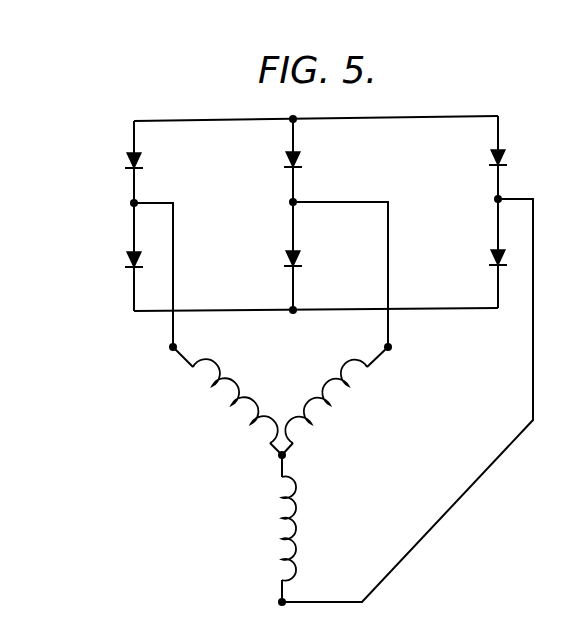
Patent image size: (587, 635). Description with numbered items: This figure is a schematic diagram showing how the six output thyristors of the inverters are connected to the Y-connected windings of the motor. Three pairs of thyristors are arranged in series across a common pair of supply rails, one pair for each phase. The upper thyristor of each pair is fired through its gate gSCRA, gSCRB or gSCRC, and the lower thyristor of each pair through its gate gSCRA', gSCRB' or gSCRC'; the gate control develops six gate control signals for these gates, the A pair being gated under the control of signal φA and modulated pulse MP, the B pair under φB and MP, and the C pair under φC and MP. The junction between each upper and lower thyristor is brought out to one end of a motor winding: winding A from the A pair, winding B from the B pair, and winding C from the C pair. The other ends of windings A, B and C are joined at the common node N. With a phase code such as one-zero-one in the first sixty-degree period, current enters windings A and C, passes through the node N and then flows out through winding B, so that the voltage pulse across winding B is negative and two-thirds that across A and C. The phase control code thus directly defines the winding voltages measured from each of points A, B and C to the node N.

The gate of thyristor SCRA gSCRA is at (91, 167).
The gate of thyristor SCRA' gSCRA' is at (87, 262).
The gate of thyristor SCRB gSCRB is at (252, 165).
The gate of thyristor SCRB' gSCRB' is at (252, 259).
The gate of thyristor SCRC gSCRC is at (457, 164).
The gate of thyristor SCRC' gSCRC' is at (458, 259).
The winding A is at (161, 349).
The winding B is at (398, 349).
The node N is at (292, 459).
The winding C is at (291, 593).